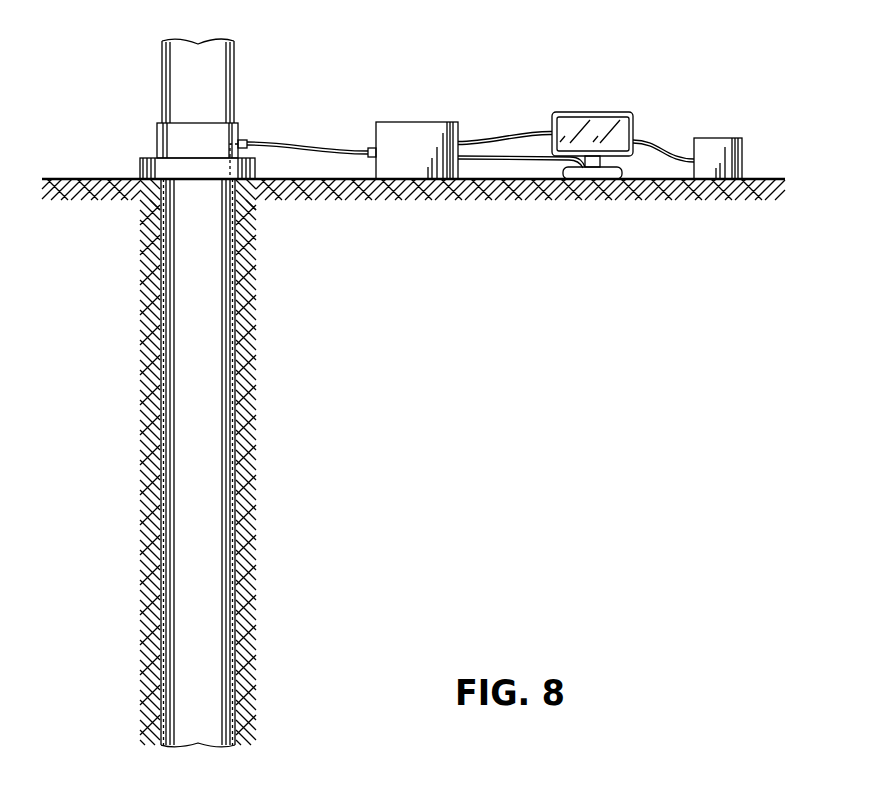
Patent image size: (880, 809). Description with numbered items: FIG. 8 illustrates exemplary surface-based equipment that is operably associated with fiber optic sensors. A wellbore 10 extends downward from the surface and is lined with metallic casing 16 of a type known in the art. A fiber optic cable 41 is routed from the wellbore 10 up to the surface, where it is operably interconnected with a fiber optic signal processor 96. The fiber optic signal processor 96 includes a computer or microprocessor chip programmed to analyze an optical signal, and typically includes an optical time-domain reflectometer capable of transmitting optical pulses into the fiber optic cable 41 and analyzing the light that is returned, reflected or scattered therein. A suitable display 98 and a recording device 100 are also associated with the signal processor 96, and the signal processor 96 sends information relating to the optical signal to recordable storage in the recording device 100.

The wellbore 10 is at (159, 448).
The metallic casing 16 is at (236, 397).
The fiber optic cable 41 is at (234, 305).
The fiber optic signal processor 96 is at (416, 124).
The display 98 is at (590, 112).
The recording device 100 is at (713, 138).